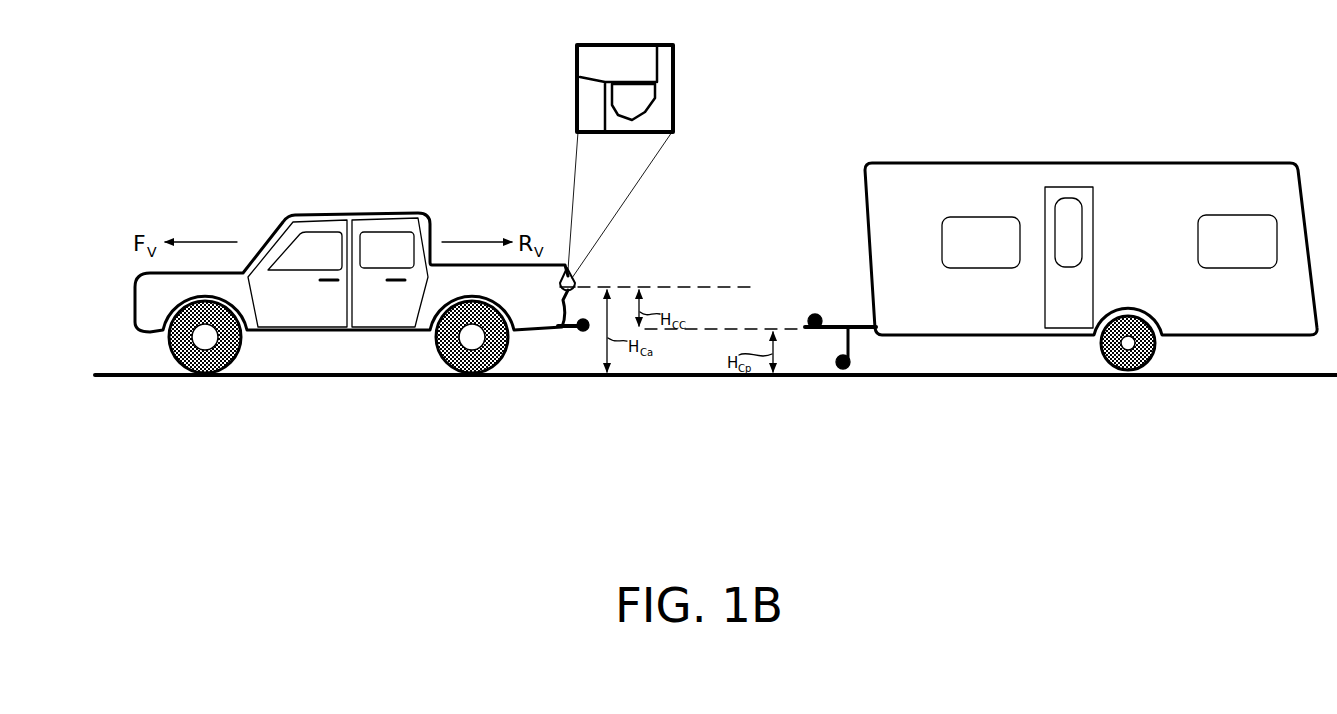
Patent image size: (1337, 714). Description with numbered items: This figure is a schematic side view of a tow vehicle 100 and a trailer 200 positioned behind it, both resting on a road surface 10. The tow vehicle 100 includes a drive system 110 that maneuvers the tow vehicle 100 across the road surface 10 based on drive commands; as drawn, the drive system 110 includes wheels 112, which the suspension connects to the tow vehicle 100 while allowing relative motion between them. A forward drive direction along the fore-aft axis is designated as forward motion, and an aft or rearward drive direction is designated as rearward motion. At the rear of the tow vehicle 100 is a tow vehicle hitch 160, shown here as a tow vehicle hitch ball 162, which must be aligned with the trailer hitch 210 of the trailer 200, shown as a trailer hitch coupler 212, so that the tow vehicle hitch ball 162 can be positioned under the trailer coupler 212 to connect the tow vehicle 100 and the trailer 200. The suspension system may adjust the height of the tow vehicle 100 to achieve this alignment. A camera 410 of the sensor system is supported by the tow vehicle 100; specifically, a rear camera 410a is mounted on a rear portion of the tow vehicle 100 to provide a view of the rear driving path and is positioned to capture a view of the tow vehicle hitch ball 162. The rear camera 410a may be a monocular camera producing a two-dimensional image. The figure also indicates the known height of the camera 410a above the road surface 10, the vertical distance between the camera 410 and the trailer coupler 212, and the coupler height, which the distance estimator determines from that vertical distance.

The road surface 10 is at (660, 377).
The tow vehicle 100 is at (332, 313).
The drive system 110 is at (205, 375).
The wheel 112 is at (472, 375).
The tow vehicle hitch 160 is at (563, 333).
The tow vehicle hitch ball 162 is at (586, 332).
The trailer 200 is at (1180, 244).
The trailer hitch 210 is at (849, 326).
The trailer hitch coupler 212 is at (814, 313).
The camera 410 is at (648, 168).
The rear camera 410a is at (656, 103).